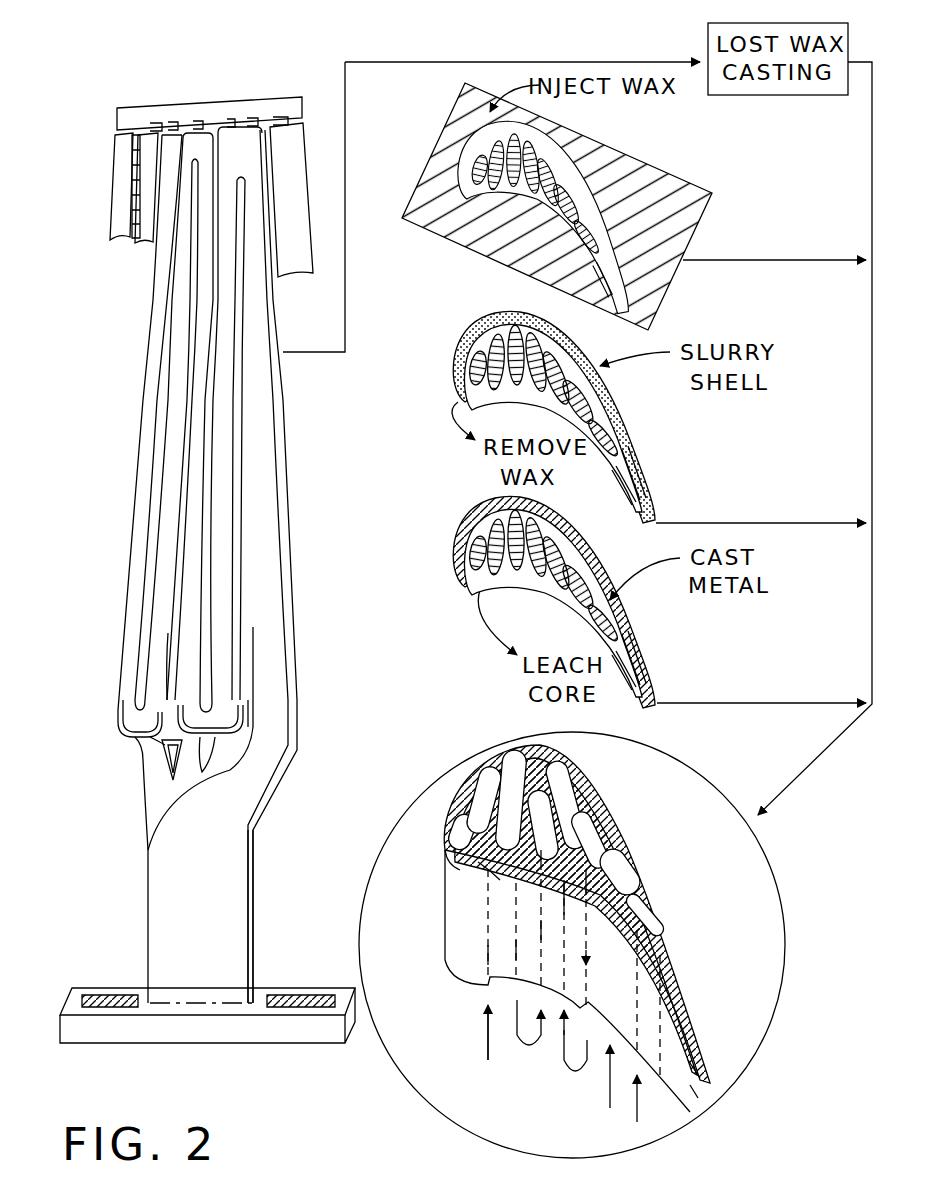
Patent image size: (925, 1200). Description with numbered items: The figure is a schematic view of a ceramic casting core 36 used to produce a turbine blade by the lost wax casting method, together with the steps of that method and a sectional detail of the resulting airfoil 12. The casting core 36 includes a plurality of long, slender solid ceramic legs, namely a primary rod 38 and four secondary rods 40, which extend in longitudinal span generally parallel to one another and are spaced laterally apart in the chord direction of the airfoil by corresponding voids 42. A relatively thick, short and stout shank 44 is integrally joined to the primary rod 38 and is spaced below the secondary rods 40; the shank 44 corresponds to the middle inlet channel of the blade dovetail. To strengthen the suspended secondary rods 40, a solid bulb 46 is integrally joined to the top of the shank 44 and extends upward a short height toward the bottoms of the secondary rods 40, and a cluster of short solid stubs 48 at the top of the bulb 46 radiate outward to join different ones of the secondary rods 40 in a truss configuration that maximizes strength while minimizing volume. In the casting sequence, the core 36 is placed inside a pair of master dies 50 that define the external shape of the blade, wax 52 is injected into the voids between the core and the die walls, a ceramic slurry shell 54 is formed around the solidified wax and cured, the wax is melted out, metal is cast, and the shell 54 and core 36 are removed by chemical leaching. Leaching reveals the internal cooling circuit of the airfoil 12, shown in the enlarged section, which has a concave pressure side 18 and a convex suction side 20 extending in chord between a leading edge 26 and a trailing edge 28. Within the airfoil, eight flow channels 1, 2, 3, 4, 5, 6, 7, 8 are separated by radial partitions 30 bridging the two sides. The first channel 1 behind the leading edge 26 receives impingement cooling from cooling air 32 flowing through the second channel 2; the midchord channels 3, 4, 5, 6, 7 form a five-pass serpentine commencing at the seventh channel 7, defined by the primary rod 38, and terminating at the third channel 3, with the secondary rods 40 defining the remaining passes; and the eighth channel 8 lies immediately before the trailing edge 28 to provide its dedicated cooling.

The first channel 1 is at (458, 818).
The second channel 2 is at (480, 773).
The third channel 3 is at (528, 762).
The fourth channel 4 is at (556, 765).
The fifth channel 5 is at (575, 790).
The sixth channel 6 is at (608, 812).
The seventh channel 7 is at (625, 868).
The eighth channel 8 is at (645, 912).
The airfoil 12 is at (640, 838).
The pressure side 18 is at (557, 932).
The suction side 20 is at (605, 790).
The leading edge 26 is at (452, 868).
The trailing edge 28 is at (708, 1080).
The radial partitions 30 is at (495, 880).
The cooling air 32 is at (608, 1090).
The casting core 36 is at (565, 205).
The primary rod 38 is at (265, 527).
The secondary rods 40 is at (225, 468).
The voids 42 is at (143, 630).
The shank 44 is at (208, 924).
The solid bulb 46 is at (180, 795).
The solid stubs 48 is at (150, 770).
The master dies 50 is at (668, 236).
The wax 52 is at (480, 322).
The ceramic slurry shell 54 is at (628, 445).